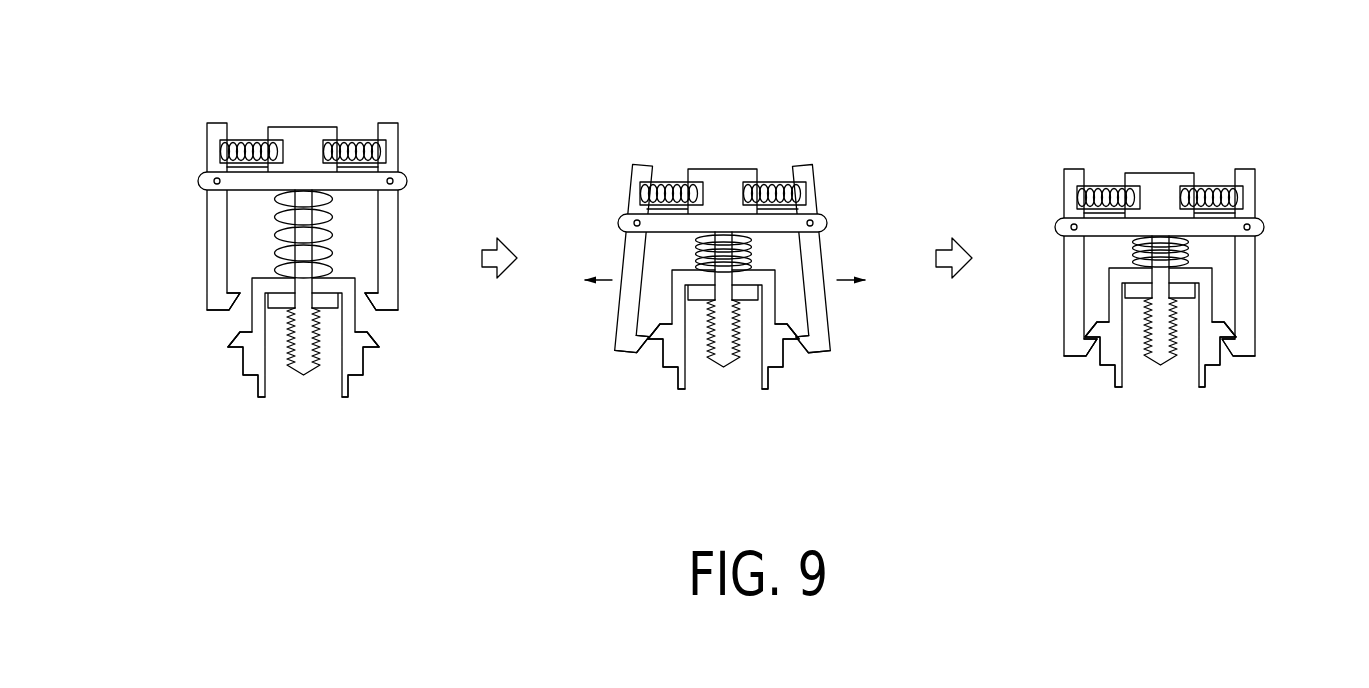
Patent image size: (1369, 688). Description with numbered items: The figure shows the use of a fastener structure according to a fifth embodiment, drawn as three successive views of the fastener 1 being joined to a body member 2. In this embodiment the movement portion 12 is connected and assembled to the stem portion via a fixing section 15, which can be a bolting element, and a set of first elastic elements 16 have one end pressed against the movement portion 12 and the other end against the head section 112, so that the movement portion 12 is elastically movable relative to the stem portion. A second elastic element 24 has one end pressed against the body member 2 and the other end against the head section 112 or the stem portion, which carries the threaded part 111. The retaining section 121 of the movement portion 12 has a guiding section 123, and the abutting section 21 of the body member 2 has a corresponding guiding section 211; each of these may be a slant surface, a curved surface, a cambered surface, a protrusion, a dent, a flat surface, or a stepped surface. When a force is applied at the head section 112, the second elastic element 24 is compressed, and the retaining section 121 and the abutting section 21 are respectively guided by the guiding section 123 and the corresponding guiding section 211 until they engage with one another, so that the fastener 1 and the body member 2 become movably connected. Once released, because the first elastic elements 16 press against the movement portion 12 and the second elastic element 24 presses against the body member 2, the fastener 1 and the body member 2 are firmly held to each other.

The fastener 1 is at (733, 233).
The body member 2 is at (701, 357).
The movement portion 12 is at (203, 222).
The fixing section 15 is at (213, 177).
The first elastic elements 16 is at (248, 140).
The abutting section 21 is at (240, 340).
The second elastic element 24 is at (333, 243).
The threaded rod 111 is at (315, 373).
The head section 112 is at (303, 130).
The retaining section 121 is at (225, 305).
The guiding section 123 is at (237, 305).
The corresponding guiding section 211 is at (235, 337).